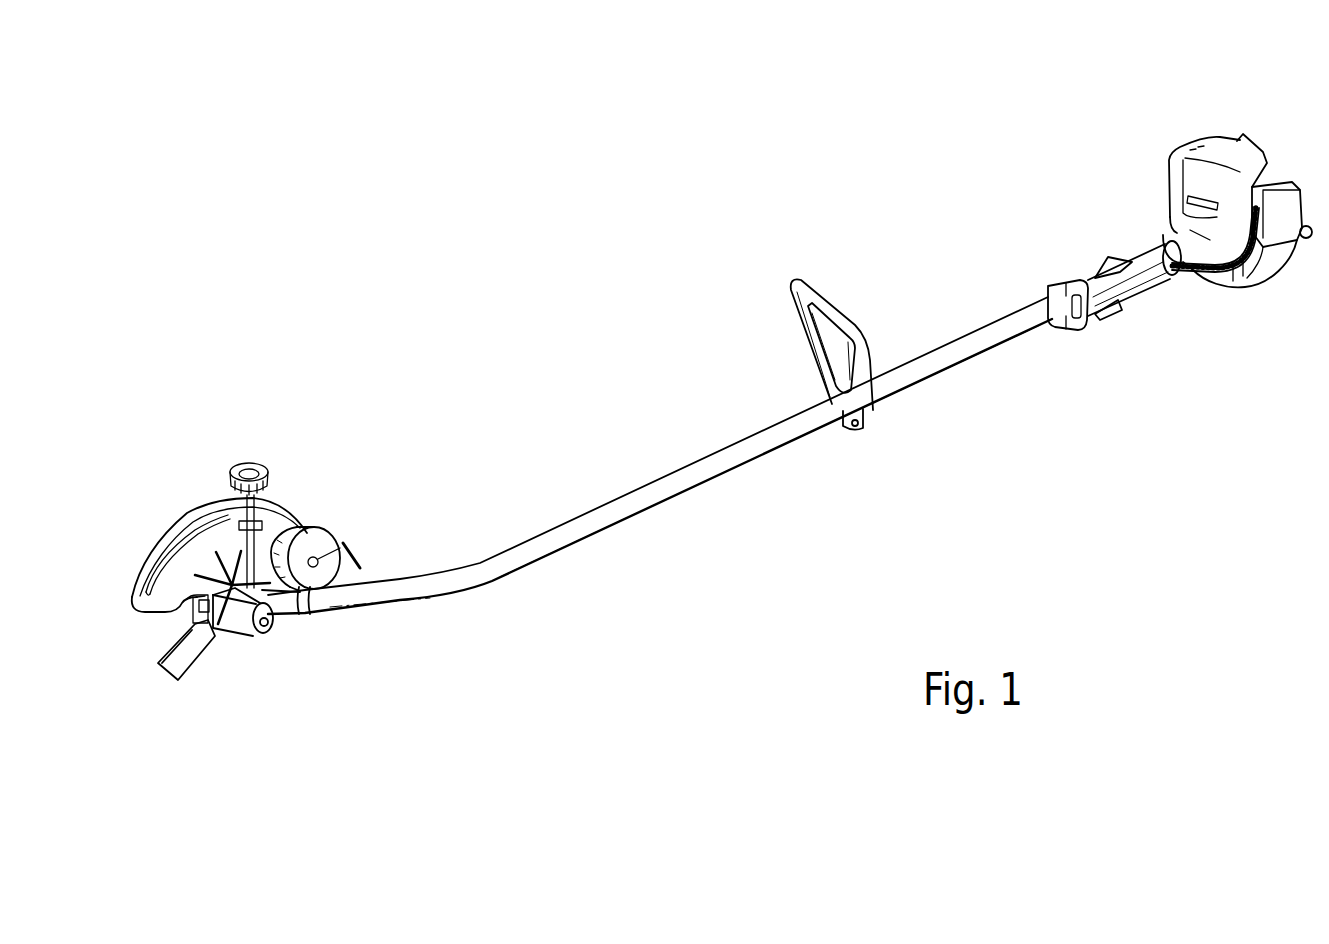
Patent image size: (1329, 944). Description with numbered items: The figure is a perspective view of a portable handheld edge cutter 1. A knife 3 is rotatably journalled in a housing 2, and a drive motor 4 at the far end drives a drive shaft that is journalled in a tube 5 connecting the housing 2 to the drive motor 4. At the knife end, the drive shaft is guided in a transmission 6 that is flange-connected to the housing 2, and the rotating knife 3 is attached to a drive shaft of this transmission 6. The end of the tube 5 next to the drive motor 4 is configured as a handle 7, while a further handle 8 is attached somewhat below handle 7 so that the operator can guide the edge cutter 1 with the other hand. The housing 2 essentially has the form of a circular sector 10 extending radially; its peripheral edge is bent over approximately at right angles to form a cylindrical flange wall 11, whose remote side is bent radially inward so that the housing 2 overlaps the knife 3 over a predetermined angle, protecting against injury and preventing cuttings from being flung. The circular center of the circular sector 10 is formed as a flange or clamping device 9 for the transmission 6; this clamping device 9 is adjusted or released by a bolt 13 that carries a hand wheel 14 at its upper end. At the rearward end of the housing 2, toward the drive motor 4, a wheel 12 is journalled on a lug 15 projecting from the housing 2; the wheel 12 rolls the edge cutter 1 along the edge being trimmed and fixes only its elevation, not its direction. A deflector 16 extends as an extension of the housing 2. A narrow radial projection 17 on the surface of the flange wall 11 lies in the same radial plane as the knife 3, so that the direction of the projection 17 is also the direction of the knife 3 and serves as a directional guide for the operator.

The edge cutter 1 is at (461, 469).
The housing 2 is at (187, 513).
The knife 3 is at (197, 657).
The drive motor 4 is at (1233, 137).
The tube 5 is at (683, 482).
The transmission 6 is at (242, 628).
The handle 7 is at (1137, 253).
The handle 8 is at (823, 303).
The clamping device 9 is at (192, 624).
The circular sector 10 is at (218, 523).
The flange wall 11 is at (150, 567).
The wheel 12 is at (331, 529).
The bolt 13 is at (258, 500).
The hand wheel 14 is at (262, 458).
The lug 15 is at (320, 556).
The deflector 16 is at (364, 562).
The radial projection 17 is at (173, 537).